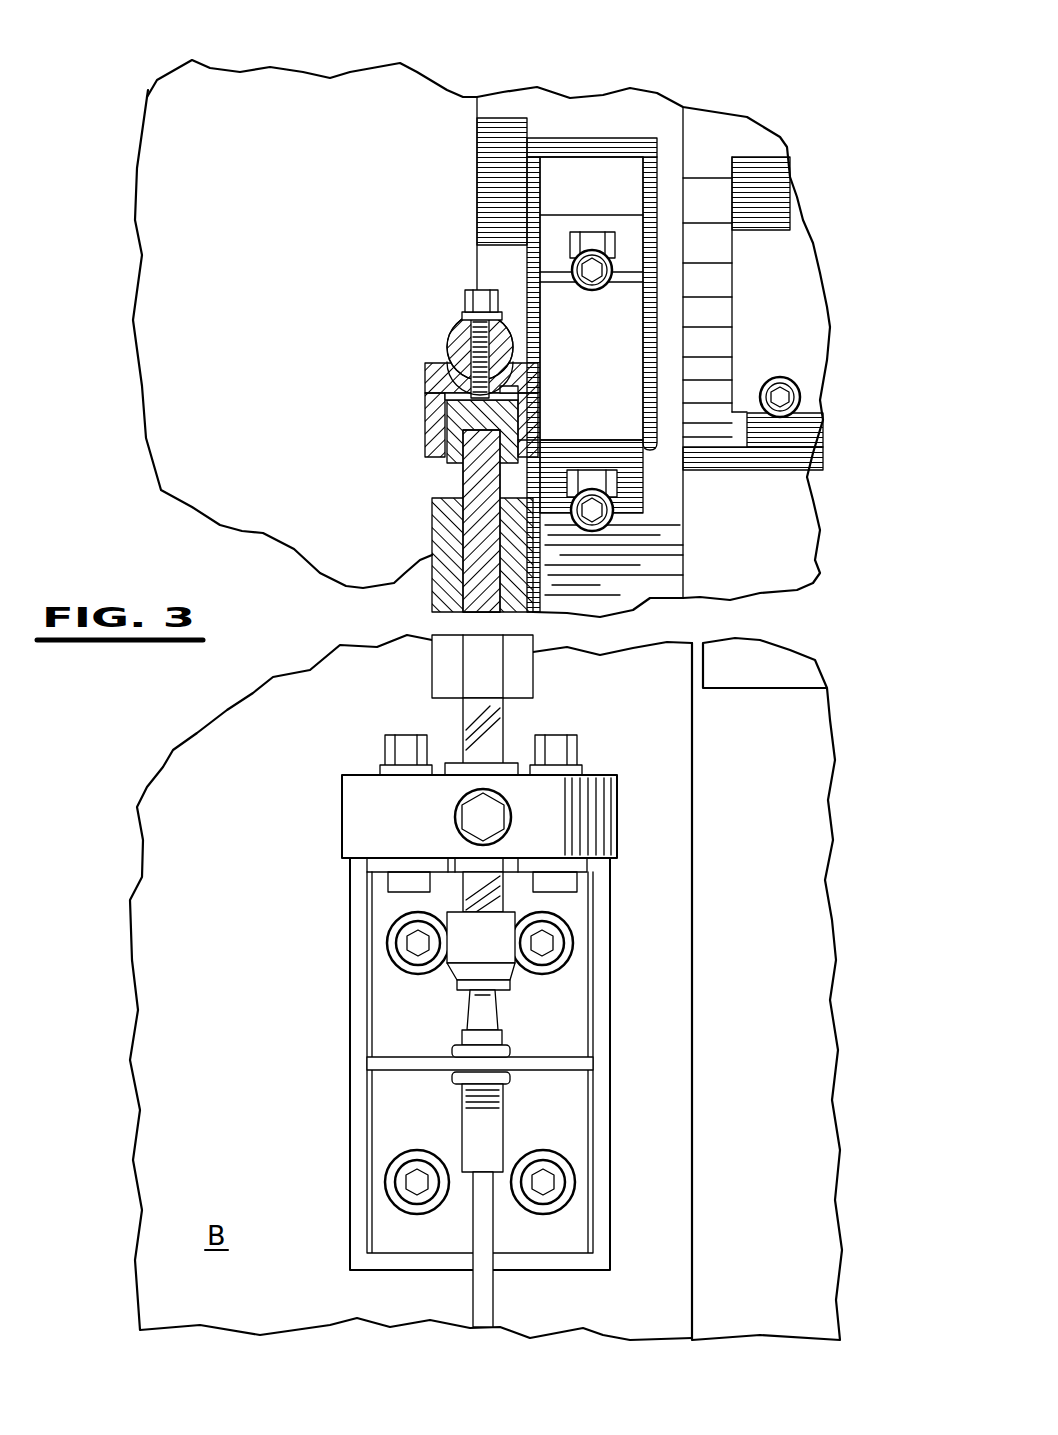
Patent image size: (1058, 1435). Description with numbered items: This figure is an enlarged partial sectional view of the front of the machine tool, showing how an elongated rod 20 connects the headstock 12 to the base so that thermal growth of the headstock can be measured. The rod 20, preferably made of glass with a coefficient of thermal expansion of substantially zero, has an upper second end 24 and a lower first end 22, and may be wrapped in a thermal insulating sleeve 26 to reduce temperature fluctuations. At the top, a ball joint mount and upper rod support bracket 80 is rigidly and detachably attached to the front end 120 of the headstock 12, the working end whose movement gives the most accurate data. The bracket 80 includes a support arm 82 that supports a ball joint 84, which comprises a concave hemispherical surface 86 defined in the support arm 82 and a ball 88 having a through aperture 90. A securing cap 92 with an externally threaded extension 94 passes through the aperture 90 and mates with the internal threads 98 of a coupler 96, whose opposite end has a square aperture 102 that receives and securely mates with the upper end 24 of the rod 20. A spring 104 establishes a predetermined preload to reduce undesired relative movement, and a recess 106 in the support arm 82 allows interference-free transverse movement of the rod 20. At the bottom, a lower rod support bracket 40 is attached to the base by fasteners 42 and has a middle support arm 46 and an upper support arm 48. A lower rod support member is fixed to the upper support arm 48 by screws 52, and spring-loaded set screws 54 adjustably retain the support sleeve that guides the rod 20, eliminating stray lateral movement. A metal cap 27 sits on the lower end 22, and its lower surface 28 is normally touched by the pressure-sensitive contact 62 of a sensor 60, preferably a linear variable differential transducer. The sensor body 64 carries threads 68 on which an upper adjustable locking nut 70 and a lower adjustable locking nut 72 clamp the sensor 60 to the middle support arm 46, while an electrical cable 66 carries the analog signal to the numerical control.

The headstock 12 is at (310, 90).
The front end 120 is at (480, 118).
The ball joint mount and upper rod support bracket 80 is at (600, 180).
The securing cap 92 is at (475, 292).
The ball 88 is at (460, 316).
The through aperture 90 is at (450, 333).
The concave hemispherical surface 86 is at (446, 354).
The ball joint 84 is at (410, 354).
The support arm 82 is at (415, 384).
The spring 104 is at (440, 412).
The recess 106 is at (447, 455).
The internal threads 98 is at (515, 392).
The coupler 96 is at (520, 435).
The second end 24 is at (462, 480).
The thermal insulating sleeve 26 is at (432, 650).
The externally threaded extension 94 is at (500, 342).
The square aperture 102 is at (568, 480).
The elongated rod 20 is at (518, 712).
The screws 52 is at (392, 740).
The spring-loaded set screws 54 is at (465, 817).
The upper support arm 48 is at (590, 840).
The middle support arm 46 is at (368, 1062).
The lower rod support bracket 40 is at (338, 942).
The first end 22 is at (465, 900).
The fasteners 42 is at (548, 930).
The metal cap 27 is at (545, 950).
The pressure-sensitive contact 62 is at (470, 990).
The lower surface 28 is at (505, 995).
The upper adjustable locking nut 70 is at (510, 1050).
The lower adjustable locking nut 72 is at (510, 1080).
The body 64 is at (462, 1135).
The threads 68 is at (505, 1110).
The sensor 60 is at (432, 1093).
The electrical cable 66 is at (493, 1288).